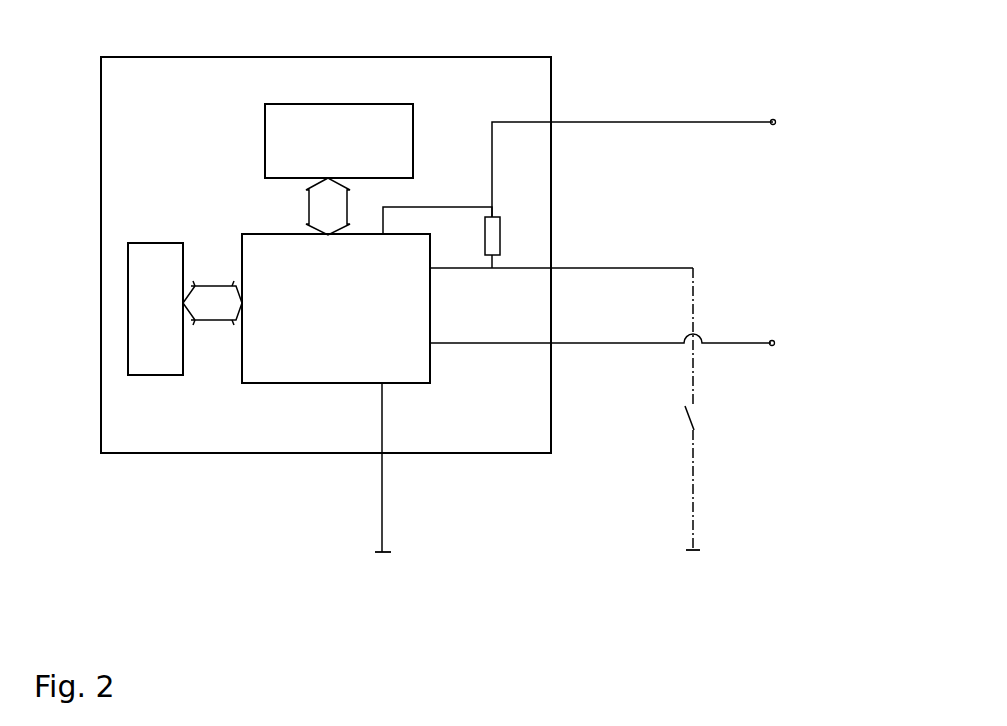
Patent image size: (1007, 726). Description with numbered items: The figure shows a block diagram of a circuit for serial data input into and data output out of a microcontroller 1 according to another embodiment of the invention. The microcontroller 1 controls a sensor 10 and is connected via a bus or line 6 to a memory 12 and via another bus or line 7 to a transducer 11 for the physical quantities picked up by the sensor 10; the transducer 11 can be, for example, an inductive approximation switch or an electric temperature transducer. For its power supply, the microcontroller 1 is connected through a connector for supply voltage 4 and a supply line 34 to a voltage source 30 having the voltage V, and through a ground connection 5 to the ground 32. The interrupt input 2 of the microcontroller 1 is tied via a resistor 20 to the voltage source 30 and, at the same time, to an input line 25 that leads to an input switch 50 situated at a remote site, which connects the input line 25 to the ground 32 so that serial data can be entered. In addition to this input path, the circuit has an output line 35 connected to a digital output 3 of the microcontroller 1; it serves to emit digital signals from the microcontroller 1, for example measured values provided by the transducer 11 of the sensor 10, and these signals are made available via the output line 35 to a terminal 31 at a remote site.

The sensor 10 is at (200, 128).
The transducer 11 is at (400, 125).
The bus or line 7 is at (327, 203).
The microcontroller 1 is at (336, 308).
The interrupt input 2 is at (550, 273).
The digital output 3 is at (590, 348).
The connector for supply voltage 4 is at (431, 238).
The ground connection 5 is at (377, 452).
The memory 12 is at (152, 260).
The bus or line 6 is at (208, 305).
The resistor 20 is at (495, 235).
The supply line 34 is at (622, 120).
The voltage source 30 is at (774, 127).
The input line 25 is at (695, 294).
The terminal 31 is at (772, 350).
The output line 35 is at (627, 345).
The input switch 50 is at (700, 416).
The ground 32 is at (703, 541).